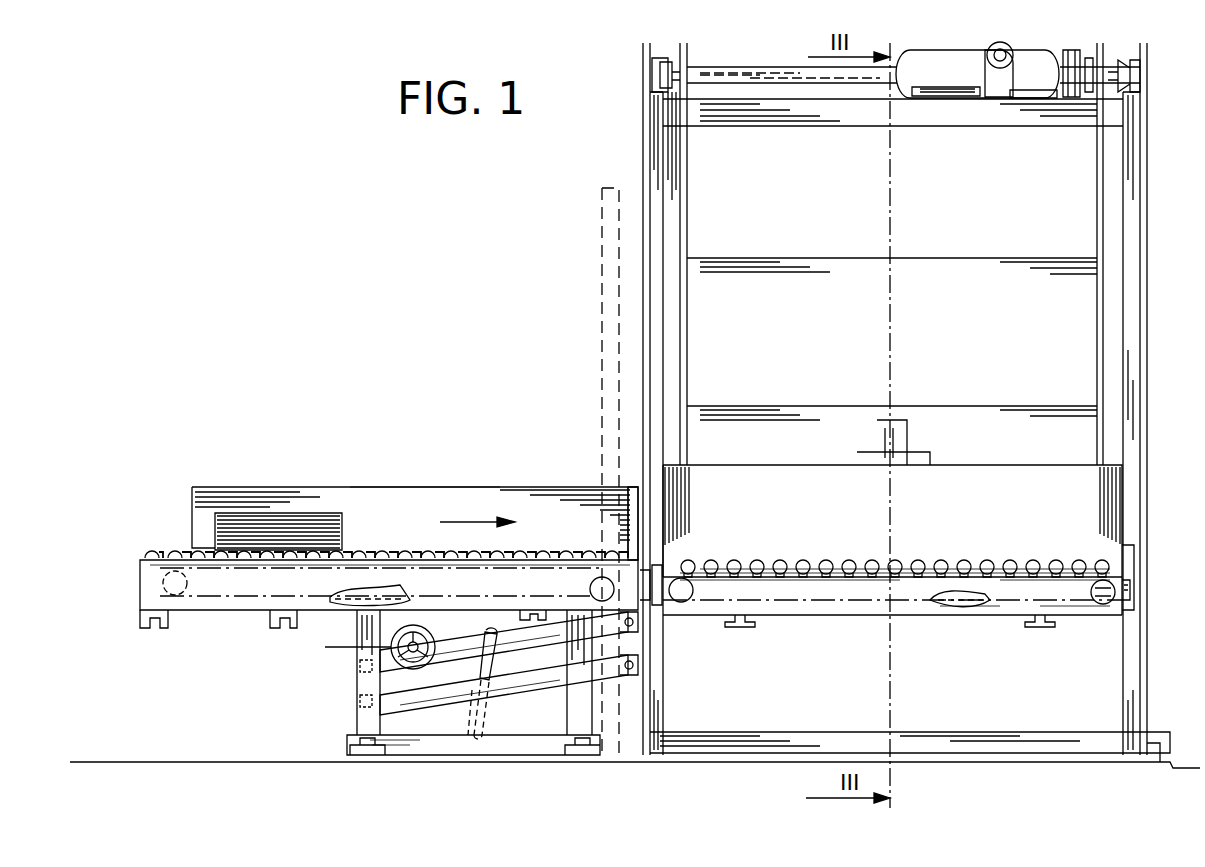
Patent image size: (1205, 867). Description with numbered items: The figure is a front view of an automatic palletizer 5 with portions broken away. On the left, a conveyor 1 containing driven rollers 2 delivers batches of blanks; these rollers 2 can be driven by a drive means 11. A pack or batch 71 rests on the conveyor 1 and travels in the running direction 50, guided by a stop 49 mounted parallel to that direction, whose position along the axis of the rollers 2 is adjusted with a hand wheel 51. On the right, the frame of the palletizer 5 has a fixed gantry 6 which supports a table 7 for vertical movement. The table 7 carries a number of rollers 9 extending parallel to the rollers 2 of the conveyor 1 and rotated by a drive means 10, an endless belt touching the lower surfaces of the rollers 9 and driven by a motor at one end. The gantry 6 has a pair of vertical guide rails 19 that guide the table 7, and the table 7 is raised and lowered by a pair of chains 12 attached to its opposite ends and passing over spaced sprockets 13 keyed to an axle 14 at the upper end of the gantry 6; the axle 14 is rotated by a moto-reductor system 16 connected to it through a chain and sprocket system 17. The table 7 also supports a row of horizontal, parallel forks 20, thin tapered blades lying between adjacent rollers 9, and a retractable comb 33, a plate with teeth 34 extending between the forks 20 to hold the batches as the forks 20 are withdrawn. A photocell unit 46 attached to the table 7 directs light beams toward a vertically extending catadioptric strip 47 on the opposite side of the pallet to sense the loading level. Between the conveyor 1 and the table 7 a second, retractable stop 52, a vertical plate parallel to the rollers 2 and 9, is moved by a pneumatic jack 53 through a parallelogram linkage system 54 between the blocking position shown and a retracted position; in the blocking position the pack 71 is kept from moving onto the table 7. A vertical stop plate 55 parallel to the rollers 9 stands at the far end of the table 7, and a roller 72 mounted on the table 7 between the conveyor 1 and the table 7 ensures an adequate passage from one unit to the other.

The conveyor 1 is at (183, 555).
The driven rollers 2 is at (388, 545).
The palletizer 5 is at (640, 160).
The fixed gantry 6 is at (650, 285).
The table 7 is at (1012, 618).
The rollers 9 is at (1010, 560).
The drive means 10 is at (970, 605).
The drive means 11 is at (535, 565).
The chains 12 is at (685, 105).
The sprockets 13 is at (690, 88).
The axle 14 is at (770, 75).
The moto-reductor system 16 is at (1000, 95).
The chain and sprocket system 17 is at (1072, 92).
The vertical guide rails 19 is at (655, 250).
The forks 20 is at (900, 575).
The retractable comb 33 is at (790, 495).
The teeth 34 is at (835, 575).
The photocell unit 46 is at (1125, 585).
The catadioptric strip 47 is at (598, 205).
The stop 49 is at (432, 500).
The running direction 50 is at (472, 520).
The hand wheel 51 is at (355, 615).
The retractable stop 52 is at (638, 487).
The pneumatic jack 53 is at (480, 716).
The parallelogram linkage system 54 is at (530, 678).
The vertical stop plate 55 is at (1122, 490).
The pack 71 is at (245, 530).
The roller 72 is at (665, 530).